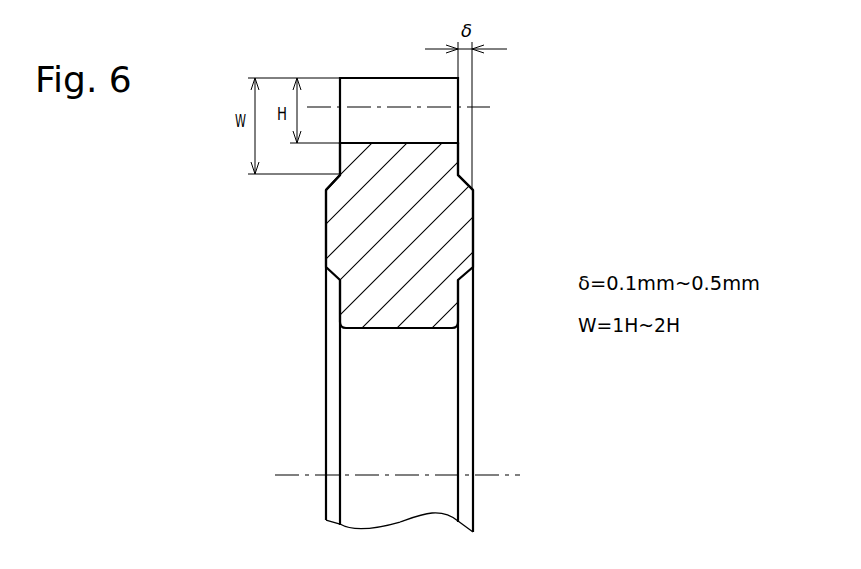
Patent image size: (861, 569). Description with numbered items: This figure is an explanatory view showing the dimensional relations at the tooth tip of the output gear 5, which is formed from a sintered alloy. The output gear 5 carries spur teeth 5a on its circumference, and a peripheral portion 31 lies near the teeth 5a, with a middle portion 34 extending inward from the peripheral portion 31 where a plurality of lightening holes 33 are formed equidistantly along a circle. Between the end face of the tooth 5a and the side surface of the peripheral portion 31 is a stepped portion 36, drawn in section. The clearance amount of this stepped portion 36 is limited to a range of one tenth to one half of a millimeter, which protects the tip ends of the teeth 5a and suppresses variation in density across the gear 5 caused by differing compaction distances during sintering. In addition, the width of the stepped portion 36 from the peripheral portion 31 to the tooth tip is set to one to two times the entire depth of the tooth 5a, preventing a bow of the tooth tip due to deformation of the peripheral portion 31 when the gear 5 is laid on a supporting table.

The output gear 5 is at (322, 348).
The spur teeth 5a is at (372, 90).
The peripheral portion 31 is at (326, 233).
The lightening holes 33 is at (412, 328).
The middle portion 34 is at (340, 456).
The stepped portion 36 is at (340, 160).